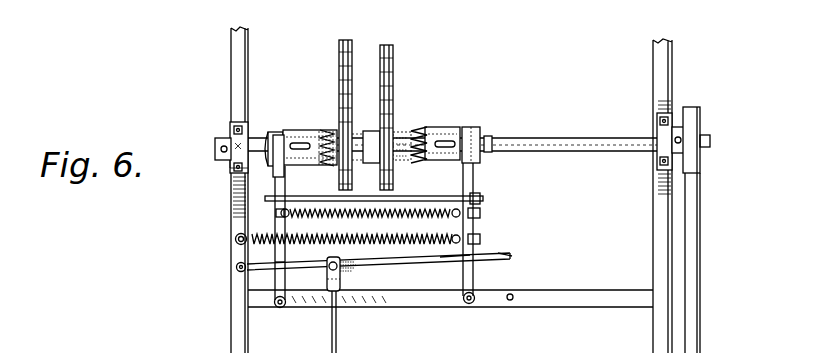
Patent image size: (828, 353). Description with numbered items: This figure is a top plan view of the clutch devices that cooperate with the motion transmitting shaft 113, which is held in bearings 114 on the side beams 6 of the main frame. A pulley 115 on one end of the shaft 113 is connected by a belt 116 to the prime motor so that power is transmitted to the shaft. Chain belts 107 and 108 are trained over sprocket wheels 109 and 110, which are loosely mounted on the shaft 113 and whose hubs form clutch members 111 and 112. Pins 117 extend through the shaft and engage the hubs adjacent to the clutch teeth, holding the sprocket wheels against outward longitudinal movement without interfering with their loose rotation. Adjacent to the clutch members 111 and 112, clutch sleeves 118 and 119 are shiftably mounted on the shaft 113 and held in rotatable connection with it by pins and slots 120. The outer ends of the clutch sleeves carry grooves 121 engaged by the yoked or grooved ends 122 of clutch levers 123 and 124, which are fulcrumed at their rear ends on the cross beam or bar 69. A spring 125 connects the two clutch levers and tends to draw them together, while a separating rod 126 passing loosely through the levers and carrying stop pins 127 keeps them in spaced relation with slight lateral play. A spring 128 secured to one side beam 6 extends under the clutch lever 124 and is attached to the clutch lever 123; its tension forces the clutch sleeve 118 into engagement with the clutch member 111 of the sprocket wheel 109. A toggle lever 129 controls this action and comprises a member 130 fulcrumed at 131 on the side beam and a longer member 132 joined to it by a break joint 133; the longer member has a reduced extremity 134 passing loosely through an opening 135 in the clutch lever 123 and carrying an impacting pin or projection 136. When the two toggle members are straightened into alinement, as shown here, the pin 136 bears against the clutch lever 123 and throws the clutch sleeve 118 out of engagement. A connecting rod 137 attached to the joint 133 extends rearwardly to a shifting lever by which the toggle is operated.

The side beams 6 is at (663, 226).
The cross beam or bar 69 is at (552, 292).
The chain belt 107 is at (392, 48).
The chain belt 108 is at (346, 42).
The sprocket wheel 109 is at (397, 197).
The sprocket wheel 110 is at (286, 201).
The clutch member 111 is at (399, 134).
The clutch member 112 is at (330, 134).
The motion transmitting shaft 113 is at (552, 137).
The bearings 114 is at (229, 140).
The pulley 115 is at (703, 152).
The belt 116 is at (697, 259).
The pins 117 is at (322, 134).
The clutch sleeve 118 is at (477, 132).
The clutch sleeve 119 is at (229, 168).
The pins and slots 120 is at (294, 144).
The grooves 121 is at (268, 134).
The yoked or grooved ends 122 is at (276, 172).
The clutch lever 123 is at (474, 284).
The clutch lever 124 is at (276, 297).
The spring 125 is at (440, 216).
The separating rod 126 is at (367, 197).
The stop pins 127 is at (284, 198).
The spring 128 is at (420, 250).
The toggle lever 129 is at (287, 300).
The member 130 is at (262, 261).
The fulcrum 131 is at (236, 268).
The longer member 132 is at (384, 270).
The break joint 133 is at (341, 293).
The reduced extremity 134 is at (512, 259).
The opening 135 is at (474, 251).
The impacting pin or projection 136 is at (460, 268).
The connecting rod 137 is at (331, 321).